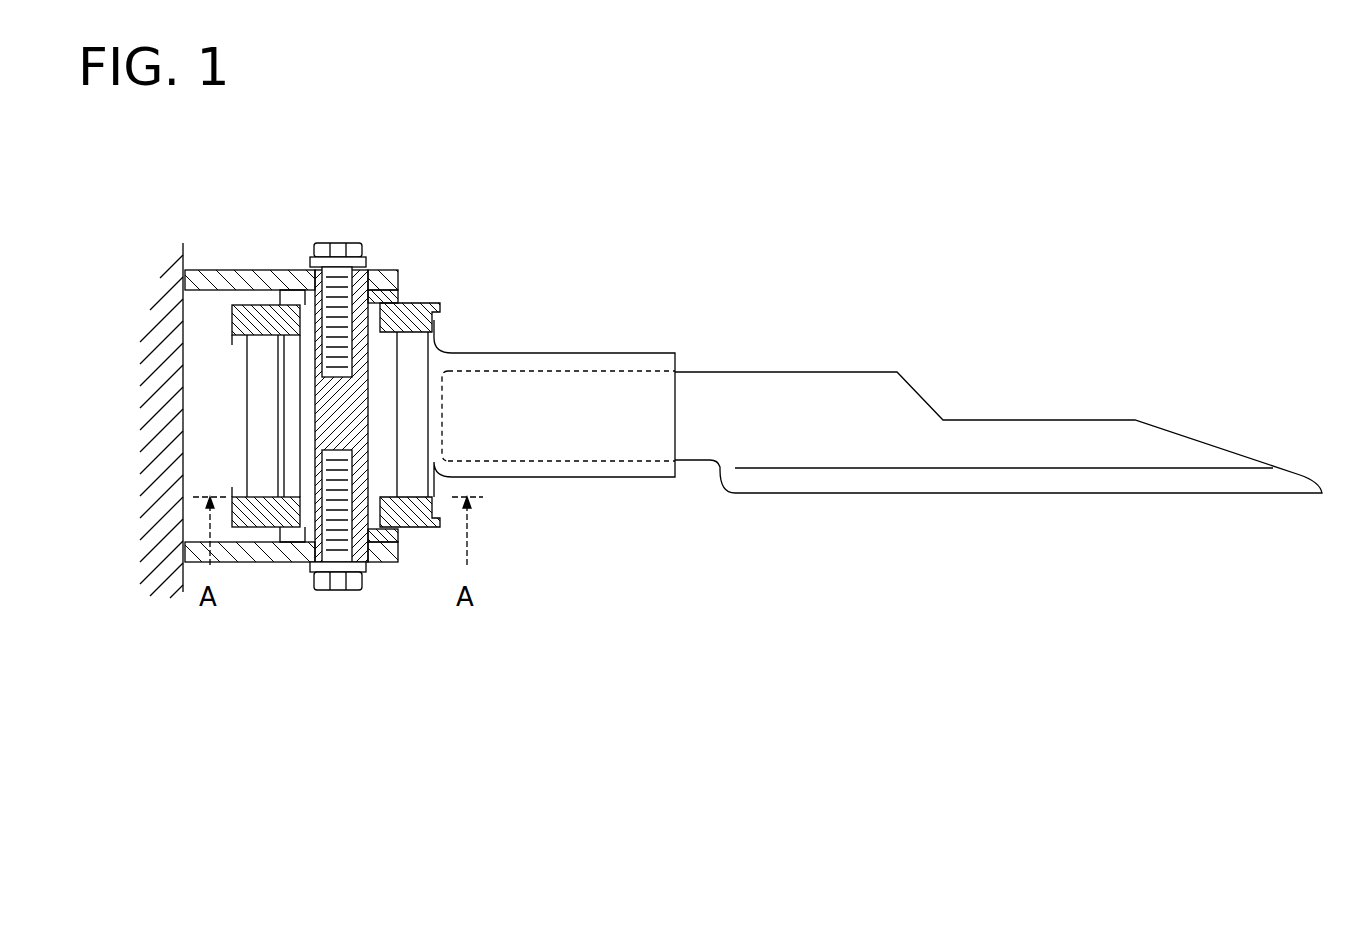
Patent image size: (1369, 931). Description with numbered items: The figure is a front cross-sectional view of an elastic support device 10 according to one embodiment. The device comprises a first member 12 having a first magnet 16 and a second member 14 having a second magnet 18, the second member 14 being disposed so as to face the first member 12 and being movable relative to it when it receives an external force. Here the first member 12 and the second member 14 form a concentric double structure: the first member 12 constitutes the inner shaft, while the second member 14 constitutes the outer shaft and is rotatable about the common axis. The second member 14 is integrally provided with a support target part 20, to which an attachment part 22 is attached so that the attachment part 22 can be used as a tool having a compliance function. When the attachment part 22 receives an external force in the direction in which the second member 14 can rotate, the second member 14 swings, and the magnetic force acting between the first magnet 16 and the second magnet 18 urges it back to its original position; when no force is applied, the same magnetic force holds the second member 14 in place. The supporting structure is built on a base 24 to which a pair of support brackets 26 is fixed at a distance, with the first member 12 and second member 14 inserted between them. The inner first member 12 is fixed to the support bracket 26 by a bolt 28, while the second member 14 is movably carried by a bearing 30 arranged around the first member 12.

The elastic support device 10 is at (706, 130).
The first member 12 is at (403, 362).
The second member 14 is at (367, 362).
The first magnet 16 is at (303, 421).
The second magnet 18 is at (430, 461).
The support target part 20 is at (620, 353).
The attachment part 22 is at (985, 430).
The base 24 is at (155, 575).
The support bracket 26 is at (377, 280).
The bolt 28 is at (338, 242).
The bearing 30 is at (268, 296).